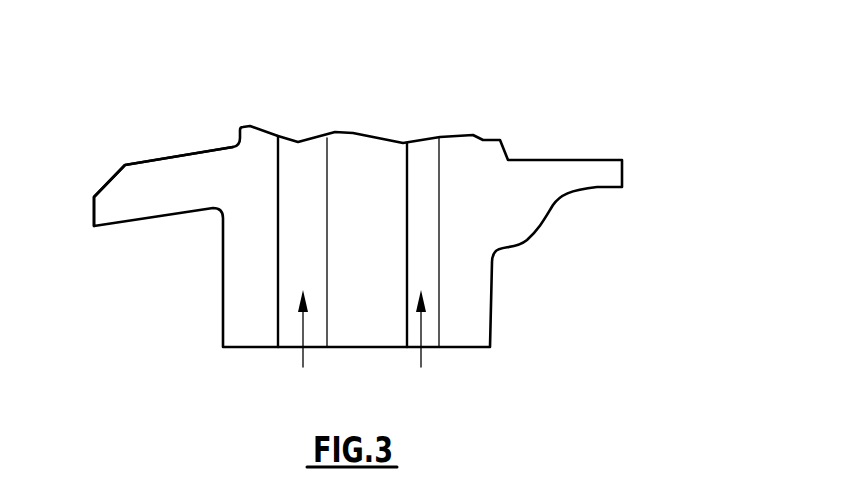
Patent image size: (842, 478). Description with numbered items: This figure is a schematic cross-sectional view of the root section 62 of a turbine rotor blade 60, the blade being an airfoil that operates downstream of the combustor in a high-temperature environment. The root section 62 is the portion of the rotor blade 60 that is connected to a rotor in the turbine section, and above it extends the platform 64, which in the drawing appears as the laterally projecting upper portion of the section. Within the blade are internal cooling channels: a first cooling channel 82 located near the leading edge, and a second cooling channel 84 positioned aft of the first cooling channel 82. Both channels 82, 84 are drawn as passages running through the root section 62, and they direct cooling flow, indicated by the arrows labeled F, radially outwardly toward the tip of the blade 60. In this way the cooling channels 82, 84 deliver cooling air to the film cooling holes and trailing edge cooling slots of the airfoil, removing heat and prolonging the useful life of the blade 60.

The turbine rotor blade 60 is at (578, 82).
The root section 62 is at (473, 318).
The platform 64 is at (142, 182).
The first cooling channel 82 is at (297, 273).
The second cooling channel 84 is at (423, 162).